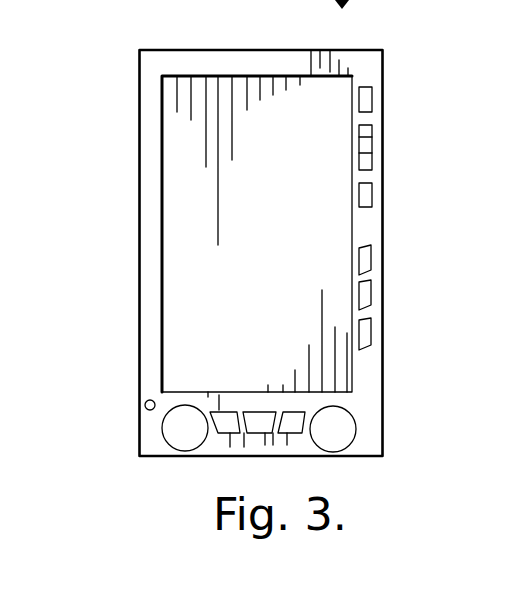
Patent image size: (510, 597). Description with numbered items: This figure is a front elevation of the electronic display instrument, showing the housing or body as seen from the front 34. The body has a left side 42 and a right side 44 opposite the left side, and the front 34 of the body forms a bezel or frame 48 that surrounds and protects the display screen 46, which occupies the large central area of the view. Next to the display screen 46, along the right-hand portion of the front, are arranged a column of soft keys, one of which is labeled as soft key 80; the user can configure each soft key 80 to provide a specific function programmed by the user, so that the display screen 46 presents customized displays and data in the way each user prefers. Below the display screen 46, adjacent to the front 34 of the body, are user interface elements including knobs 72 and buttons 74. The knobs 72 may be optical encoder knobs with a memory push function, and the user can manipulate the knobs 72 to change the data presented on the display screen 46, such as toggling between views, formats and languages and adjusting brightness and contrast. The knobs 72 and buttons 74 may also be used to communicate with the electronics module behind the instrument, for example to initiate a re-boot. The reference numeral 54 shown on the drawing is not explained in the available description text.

The left side 42 is at (128, 147).
The bezel or frame 48 is at (147, 73).
The front 34 is at (197, 230).
The right side 44 is at (394, 150).
The soft key 80 is at (372, 192).
The display screen 46 is at (330, 250).
The buttons 74 is at (372, 333).
The knobs 72 is at (175, 437).
The keypad buttons 54 is at (258, 423).